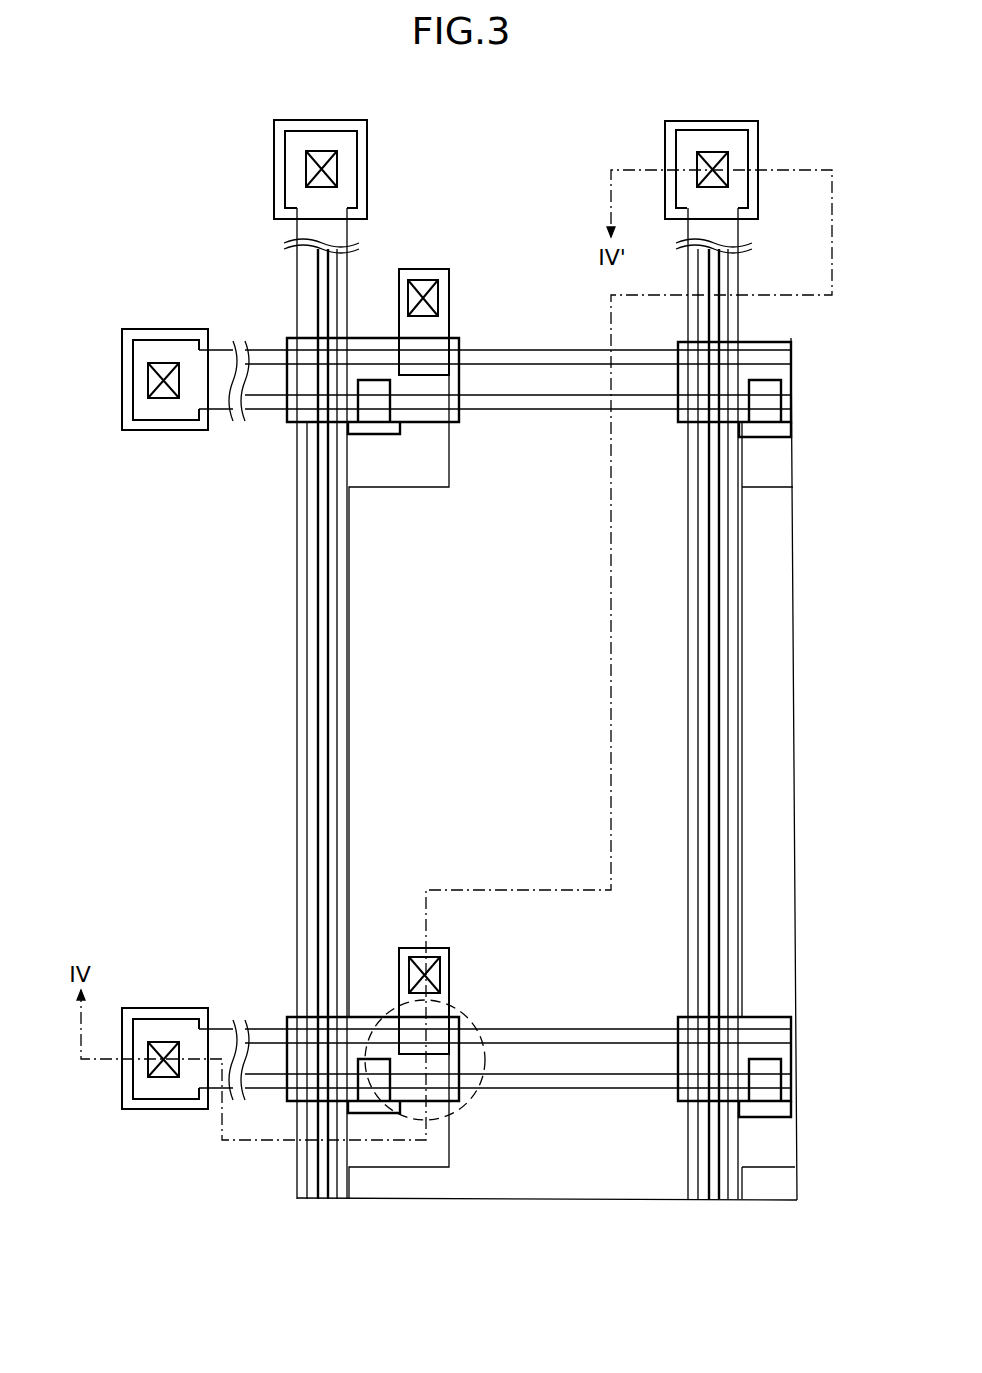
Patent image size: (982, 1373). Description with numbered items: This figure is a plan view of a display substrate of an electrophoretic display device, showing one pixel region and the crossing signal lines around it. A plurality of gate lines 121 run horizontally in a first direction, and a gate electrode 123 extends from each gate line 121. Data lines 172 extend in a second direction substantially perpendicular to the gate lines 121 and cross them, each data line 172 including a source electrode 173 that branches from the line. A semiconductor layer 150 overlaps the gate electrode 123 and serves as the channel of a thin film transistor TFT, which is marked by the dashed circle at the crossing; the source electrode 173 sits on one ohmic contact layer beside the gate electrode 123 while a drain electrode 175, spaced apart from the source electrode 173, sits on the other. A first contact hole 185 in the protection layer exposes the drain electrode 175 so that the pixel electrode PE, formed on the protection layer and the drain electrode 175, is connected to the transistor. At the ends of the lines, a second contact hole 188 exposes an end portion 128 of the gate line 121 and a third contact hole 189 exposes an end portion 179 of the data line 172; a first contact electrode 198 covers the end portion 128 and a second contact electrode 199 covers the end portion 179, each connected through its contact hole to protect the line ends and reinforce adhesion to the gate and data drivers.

The gate line 121 is at (548, 350).
The gate electrode 123 is at (462, 1087).
The end portion of the gate line 128 is at (145, 1109).
The semiconductor layer 150 is at (375, 1092).
The data line 172 is at (297, 643).
The source electrode 173 is at (425, 1165).
The drain electrode 175 is at (450, 988).
The end portion of the data line 179 is at (737, 130).
The first contact hole 185 is at (440, 967).
The second contact hole 188 is at (163, 1042).
The third contact hole 189 is at (706, 152).
The first contact electrode 198 is at (181, 1109).
The second contact electrode 199 is at (758, 145).
The pixel electrode PE is at (568, 1043).
The thin film transistor TFT is at (485, 1060).